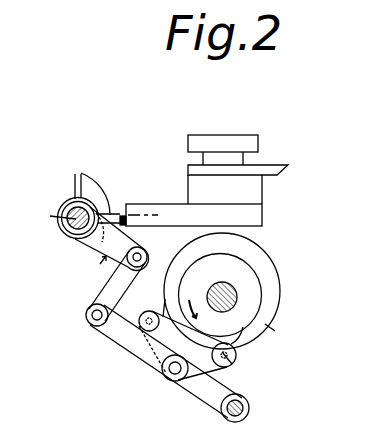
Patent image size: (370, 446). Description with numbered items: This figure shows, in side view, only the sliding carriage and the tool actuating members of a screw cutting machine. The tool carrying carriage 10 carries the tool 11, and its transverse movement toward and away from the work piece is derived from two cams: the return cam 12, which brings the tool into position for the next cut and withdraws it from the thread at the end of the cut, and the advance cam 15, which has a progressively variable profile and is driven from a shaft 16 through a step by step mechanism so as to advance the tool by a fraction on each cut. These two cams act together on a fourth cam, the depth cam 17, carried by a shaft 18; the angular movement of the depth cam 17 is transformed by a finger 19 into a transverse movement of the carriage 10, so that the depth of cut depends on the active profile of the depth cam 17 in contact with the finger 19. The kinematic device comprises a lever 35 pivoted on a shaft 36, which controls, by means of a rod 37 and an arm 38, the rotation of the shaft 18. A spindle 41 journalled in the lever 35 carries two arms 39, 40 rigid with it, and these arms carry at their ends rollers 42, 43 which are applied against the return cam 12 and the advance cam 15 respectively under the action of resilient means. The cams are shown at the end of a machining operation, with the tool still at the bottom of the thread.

The tool carrying carriage 10 is at (245, 216).
The tool 11 is at (272, 174).
The return cam 12 is at (263, 253).
The advance cam 15 is at (252, 285).
The shaft 16 is at (233, 305).
The depth cam 17 is at (92, 183).
The shaft 18 is at (72, 222).
The finger 19 is at (122, 215).
The lever 35 is at (108, 331).
The shaft 36 is at (249, 407).
The rod 37 is at (115, 283).
The arm 38 is at (138, 239).
The arm 39 is at (150, 335).
The arm 40 is at (193, 370).
The spindle 41 is at (170, 372).
The roller 42 is at (153, 311).
The roller 43 is at (234, 358).